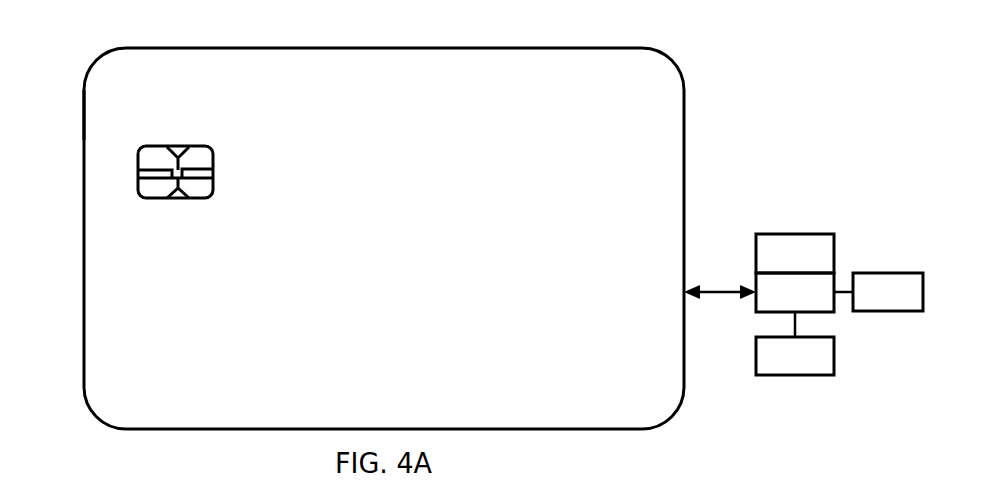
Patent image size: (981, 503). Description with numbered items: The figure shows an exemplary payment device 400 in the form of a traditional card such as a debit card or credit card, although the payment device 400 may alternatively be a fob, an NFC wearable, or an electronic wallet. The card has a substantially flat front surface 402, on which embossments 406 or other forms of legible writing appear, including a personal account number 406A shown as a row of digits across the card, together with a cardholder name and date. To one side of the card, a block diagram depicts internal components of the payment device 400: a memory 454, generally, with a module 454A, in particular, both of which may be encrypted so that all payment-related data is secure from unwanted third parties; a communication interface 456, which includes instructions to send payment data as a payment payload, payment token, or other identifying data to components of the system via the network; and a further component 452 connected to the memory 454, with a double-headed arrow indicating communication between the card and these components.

The payment device 400 is at (183, 48).
The front surface 402 is at (666, 159).
The personal account number (PAN) 406A is at (102, 286).
The embossments 406 is at (455, 388).
The antenna / transceiver component 452 is at (795, 253).
The memory 454 is at (795, 292).
The module 454A is at (878, 292).
The communication interface 456 is at (795, 343).